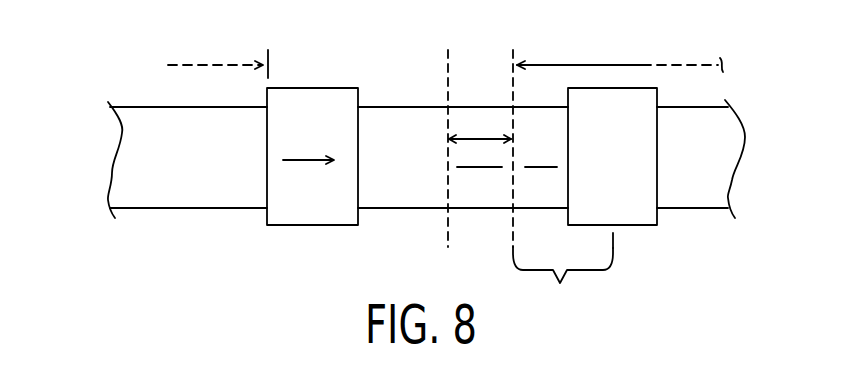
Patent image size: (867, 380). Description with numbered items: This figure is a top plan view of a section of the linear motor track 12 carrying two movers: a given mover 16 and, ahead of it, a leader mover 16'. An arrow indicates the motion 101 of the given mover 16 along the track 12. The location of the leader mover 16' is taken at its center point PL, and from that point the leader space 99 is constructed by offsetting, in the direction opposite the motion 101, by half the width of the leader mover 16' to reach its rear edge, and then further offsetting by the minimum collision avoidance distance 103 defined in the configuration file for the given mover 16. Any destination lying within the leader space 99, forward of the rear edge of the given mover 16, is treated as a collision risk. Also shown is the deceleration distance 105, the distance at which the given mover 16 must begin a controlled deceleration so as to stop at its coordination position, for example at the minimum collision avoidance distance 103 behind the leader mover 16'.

The linear motor track 12 is at (140, 165).
The given mover 16 is at (312, 124).
The leader mover 16' is at (644, 181).
The leader space 99 is at (232, 65).
The motion 101 is at (303, 163).
The minimum collision avoidance distance 103 is at (563, 283).
The deceleration distance 105 is at (480, 139).
The center point of the leader mover PL is at (613, 240).